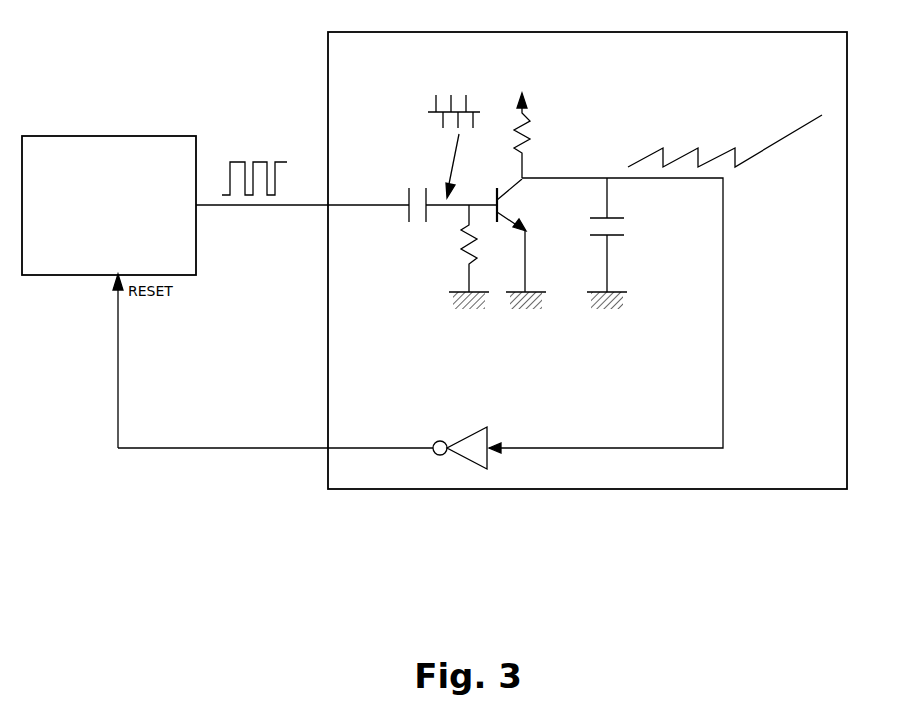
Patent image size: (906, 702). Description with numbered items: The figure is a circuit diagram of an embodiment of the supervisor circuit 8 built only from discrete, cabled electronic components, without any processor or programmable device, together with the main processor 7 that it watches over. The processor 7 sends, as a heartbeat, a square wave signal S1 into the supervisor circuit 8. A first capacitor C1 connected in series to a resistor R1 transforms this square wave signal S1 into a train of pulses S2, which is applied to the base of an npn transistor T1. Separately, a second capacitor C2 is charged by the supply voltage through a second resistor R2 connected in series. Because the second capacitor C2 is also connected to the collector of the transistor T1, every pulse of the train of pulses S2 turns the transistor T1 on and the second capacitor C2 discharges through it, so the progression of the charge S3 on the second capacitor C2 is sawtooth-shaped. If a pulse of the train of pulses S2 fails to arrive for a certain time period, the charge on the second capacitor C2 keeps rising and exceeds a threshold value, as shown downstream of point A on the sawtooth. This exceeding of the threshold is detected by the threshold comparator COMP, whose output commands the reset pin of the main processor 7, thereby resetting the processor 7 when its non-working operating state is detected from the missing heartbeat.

The processor 7 is at (83, 133).
The supervisor circuit 8 is at (328, 62).
The square wave signal S1 is at (254, 168).
The train of pulses S2 is at (443, 146).
The charge progression on the second capacitor S3 is at (725, 141).
The point A is at (754, 135).
The first capacitor C1 is at (415, 217).
The second capacitor C2 is at (622, 243).
The resistor R1 is at (461, 257).
The second resistor R2 is at (534, 121).
The npn transistor T1 is at (521, 244).
The threshold comparator COMP is at (302, 435).